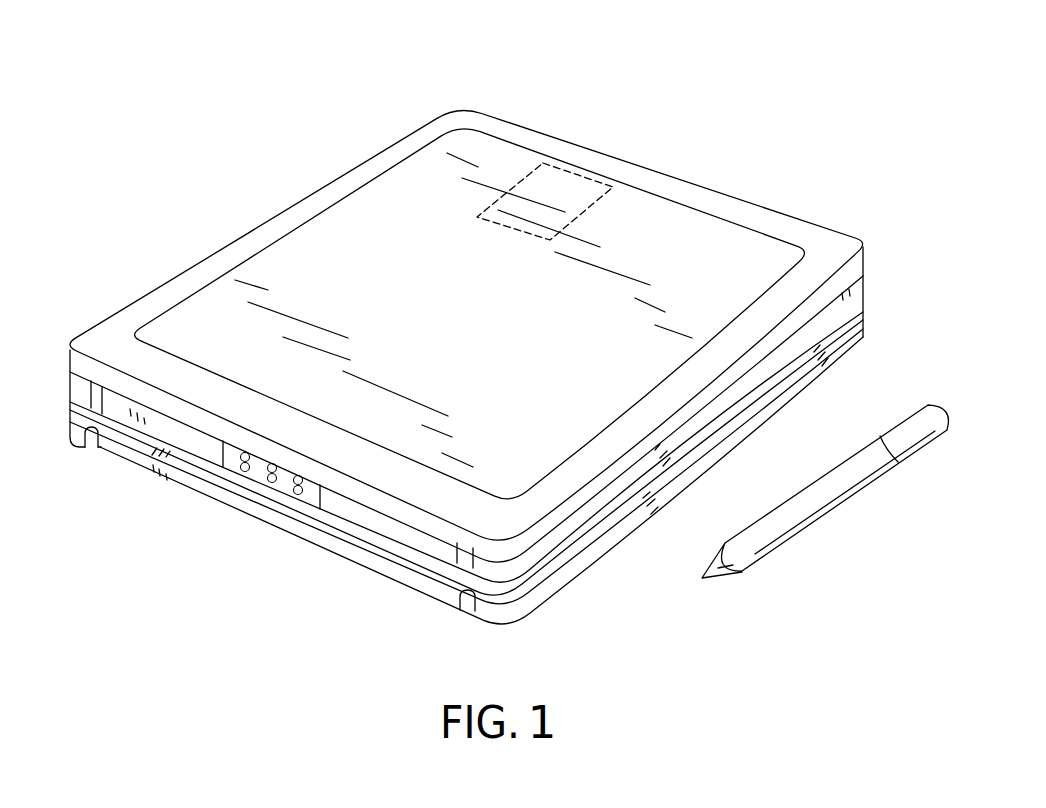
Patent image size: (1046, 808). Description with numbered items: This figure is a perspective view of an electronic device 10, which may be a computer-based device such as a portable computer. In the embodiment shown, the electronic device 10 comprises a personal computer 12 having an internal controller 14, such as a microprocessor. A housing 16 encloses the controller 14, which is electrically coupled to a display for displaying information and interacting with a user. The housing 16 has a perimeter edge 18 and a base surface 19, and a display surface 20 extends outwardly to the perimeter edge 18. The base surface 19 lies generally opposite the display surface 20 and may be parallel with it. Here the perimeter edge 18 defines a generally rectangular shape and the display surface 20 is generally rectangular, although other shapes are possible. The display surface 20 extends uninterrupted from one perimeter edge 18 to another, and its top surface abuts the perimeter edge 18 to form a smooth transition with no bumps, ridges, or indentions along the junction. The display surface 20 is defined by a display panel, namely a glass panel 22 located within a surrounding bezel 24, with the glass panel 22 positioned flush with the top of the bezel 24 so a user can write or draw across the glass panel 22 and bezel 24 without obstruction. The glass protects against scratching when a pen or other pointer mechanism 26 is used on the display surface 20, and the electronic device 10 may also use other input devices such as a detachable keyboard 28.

The electronic device 10 is at (509, 61).
The personal computer 12 is at (771, 198).
The internal controller 14 is at (573, 176).
The housing 16 is at (863, 286).
The perimeter edge 18 is at (193, 265).
The base surface 19 is at (543, 586).
The display surface 20 is at (326, 214).
The glass panel 22 is at (540, 463).
The bezel 24 is at (607, 457).
The pointer mechanism 26 is at (858, 495).
The detachable keyboard 28 is at (290, 540).